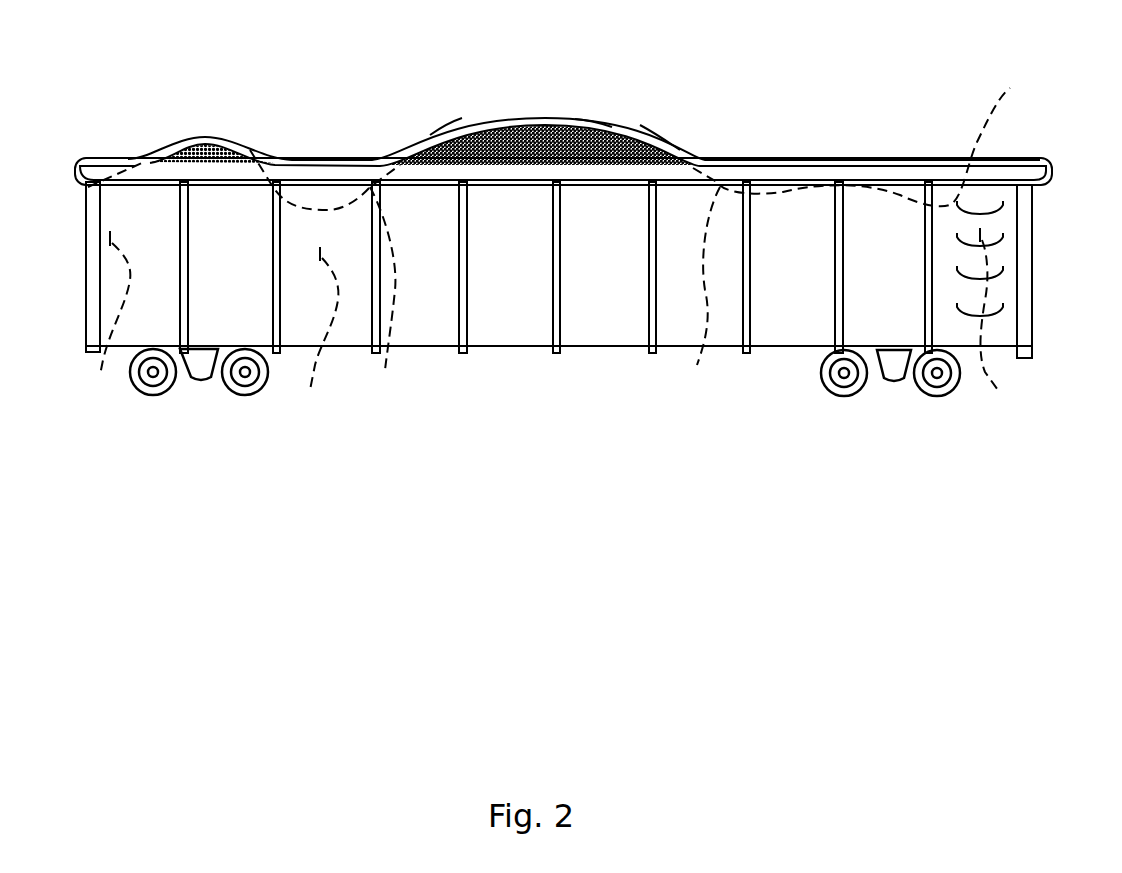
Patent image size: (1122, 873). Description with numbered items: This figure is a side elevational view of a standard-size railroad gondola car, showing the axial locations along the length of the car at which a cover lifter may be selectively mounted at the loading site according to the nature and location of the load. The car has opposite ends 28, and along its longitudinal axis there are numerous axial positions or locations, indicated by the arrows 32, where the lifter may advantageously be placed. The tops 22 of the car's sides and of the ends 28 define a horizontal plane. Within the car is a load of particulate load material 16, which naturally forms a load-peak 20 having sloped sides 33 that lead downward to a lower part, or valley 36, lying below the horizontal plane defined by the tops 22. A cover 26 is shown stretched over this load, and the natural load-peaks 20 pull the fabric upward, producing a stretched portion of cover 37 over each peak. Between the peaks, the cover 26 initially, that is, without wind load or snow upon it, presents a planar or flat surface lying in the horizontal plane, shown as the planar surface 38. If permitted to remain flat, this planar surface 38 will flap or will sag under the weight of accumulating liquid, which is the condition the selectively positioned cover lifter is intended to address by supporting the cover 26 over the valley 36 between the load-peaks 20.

The particulate load material 16 is at (424, 106).
The load-peak 20 is at (268, 132).
The tops 22 is at (559, 203).
The cover 26 is at (1013, 160).
The ends 28 is at (85, 278).
The arrows 32 is at (559, 326).
The sloped sides 33 is at (450, 150).
The valley 36 is at (565, 230).
The stretched portion of cover 37 is at (600, 127).
The planar surface 38 is at (835, 150).